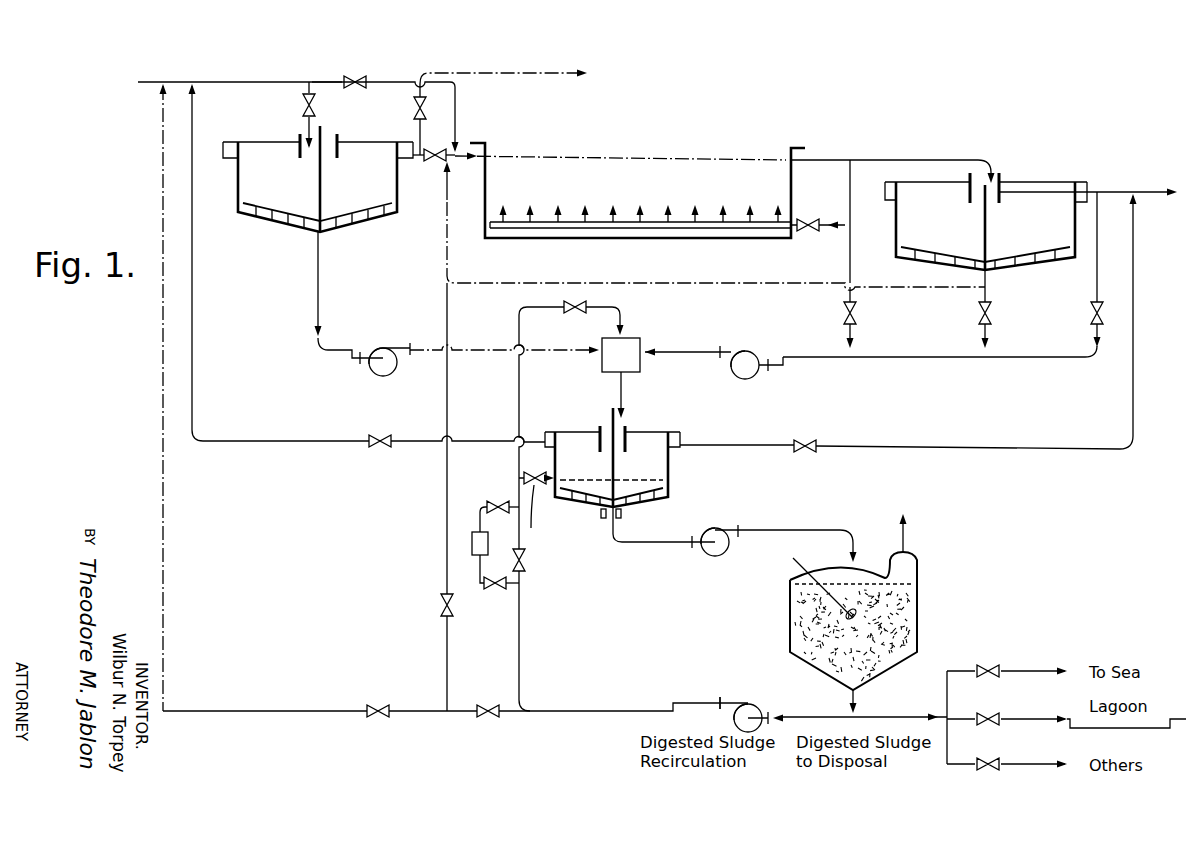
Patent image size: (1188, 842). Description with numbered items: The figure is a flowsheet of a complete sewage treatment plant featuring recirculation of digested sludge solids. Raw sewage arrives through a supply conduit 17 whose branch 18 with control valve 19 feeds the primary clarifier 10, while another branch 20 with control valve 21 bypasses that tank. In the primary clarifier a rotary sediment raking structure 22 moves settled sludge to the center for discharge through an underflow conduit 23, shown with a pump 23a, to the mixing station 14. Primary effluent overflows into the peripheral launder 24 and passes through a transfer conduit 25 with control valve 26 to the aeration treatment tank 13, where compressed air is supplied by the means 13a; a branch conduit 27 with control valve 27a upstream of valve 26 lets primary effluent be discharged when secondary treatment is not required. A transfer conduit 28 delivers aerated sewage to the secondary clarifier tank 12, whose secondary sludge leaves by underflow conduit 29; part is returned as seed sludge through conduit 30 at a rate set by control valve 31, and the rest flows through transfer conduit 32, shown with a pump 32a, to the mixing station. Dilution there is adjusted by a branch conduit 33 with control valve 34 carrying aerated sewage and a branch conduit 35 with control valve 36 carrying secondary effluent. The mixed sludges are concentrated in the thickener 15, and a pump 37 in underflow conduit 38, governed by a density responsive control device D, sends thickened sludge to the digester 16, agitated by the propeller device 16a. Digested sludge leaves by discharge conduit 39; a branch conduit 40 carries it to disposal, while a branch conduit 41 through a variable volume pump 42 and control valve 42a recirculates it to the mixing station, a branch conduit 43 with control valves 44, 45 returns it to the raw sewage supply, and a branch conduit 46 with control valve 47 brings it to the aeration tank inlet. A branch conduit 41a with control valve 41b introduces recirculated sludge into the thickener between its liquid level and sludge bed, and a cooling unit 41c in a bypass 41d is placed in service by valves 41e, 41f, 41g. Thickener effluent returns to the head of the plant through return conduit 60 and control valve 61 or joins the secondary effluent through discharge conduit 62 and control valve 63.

The primary clarifier 10 is at (238, 183).
The secondary clarifier tank 12 is at (1040, 262).
The aeration treatment tank 13 is at (518, 238).
The compressed air supply means 13a is at (818, 229).
The mixing station 14 is at (643, 342).
The thickener 15 is at (672, 468).
The digester 16 is at (918, 618).
The propeller device 16a is at (795, 562).
The supply conduit 17 is at (237, 81).
The branch 18 is at (306, 89).
The control valve 19 is at (305, 106).
The branch 20 is at (318, 78).
The control valve 21 is at (350, 78).
The rotary sediment raking structure 22 is at (352, 208).
The underflow conduit 23 is at (317, 273).
The primary sludge pump 23a is at (388, 349).
The peripheral launder 24 is at (413, 159).
The transfer conduit 25 is at (438, 150).
The control valve 26 is at (444, 166).
The branch conduit 27 is at (476, 73).
The control valve 27a is at (414, 108).
The transfer conduit 28 is at (818, 159).
The underflow conduit 29 is at (988, 283).
The conduit 30 is at (882, 287).
The control valve 31 is at (978, 316).
The transfer conduit 32 is at (944, 358).
The waste sludge pump 32a is at (758, 352).
The branch conduit 33 is at (851, 263).
The control valve 34 is at (858, 314).
The branch conduit 35 is at (1038, 358).
The control valve 36 is at (1090, 317).
The pump 37 is at (712, 557).
The underflow conduit 38 is at (660, 544).
The discharge conduit 39 is at (851, 699).
The branch conduit 40 is at (883, 717).
The branch conduit 41 is at (520, 623).
The branch conduit 41a is at (547, 484).
The control valve 41b is at (541, 515).
The cooling unit 41c is at (472, 531).
The bypass 41d is at (478, 588).
The valve 41e is at (527, 563).
The valve 41f is at (496, 596).
The valve 41g is at (497, 500).
The variable volume pump 42 is at (752, 703).
The control valve 42a is at (578, 313).
The branch conduit 43 is at (262, 710).
The control valve 44 is at (490, 719).
The control valve 45 is at (378, 719).
The branch conduit 46 is at (445, 548).
The control valve 47 is at (439, 605).
The return conduit 60 is at (268, 443).
The control valve 61 is at (383, 448).
The discharge conduit 62 is at (760, 448).
The control valve 63 is at (809, 441).
The density responsive control device D is at (622, 513).